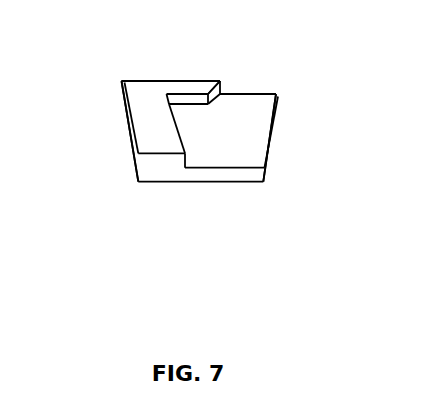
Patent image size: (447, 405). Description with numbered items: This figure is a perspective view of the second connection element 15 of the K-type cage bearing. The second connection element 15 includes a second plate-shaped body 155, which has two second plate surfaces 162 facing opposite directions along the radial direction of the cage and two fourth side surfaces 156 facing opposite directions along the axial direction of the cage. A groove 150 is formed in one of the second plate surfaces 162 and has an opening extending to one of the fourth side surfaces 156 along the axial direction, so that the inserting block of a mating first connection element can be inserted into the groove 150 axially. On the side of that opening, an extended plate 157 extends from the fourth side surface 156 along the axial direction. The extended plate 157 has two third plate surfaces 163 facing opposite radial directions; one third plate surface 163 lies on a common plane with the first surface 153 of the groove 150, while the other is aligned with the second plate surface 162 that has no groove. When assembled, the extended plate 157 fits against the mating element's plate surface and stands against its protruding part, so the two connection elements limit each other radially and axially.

The second connection element 15 is at (130, 222).
The groove 150 is at (189, 108).
The first surface 153 is at (197, 110).
The second plate-shaped body 155 is at (154, 164).
The fourth side surface 156 is at (111, 120).
The extended plate 157 is at (214, 170).
The second plate surface 162 is at (133, 80).
The third plate surface 163 is at (281, 114).